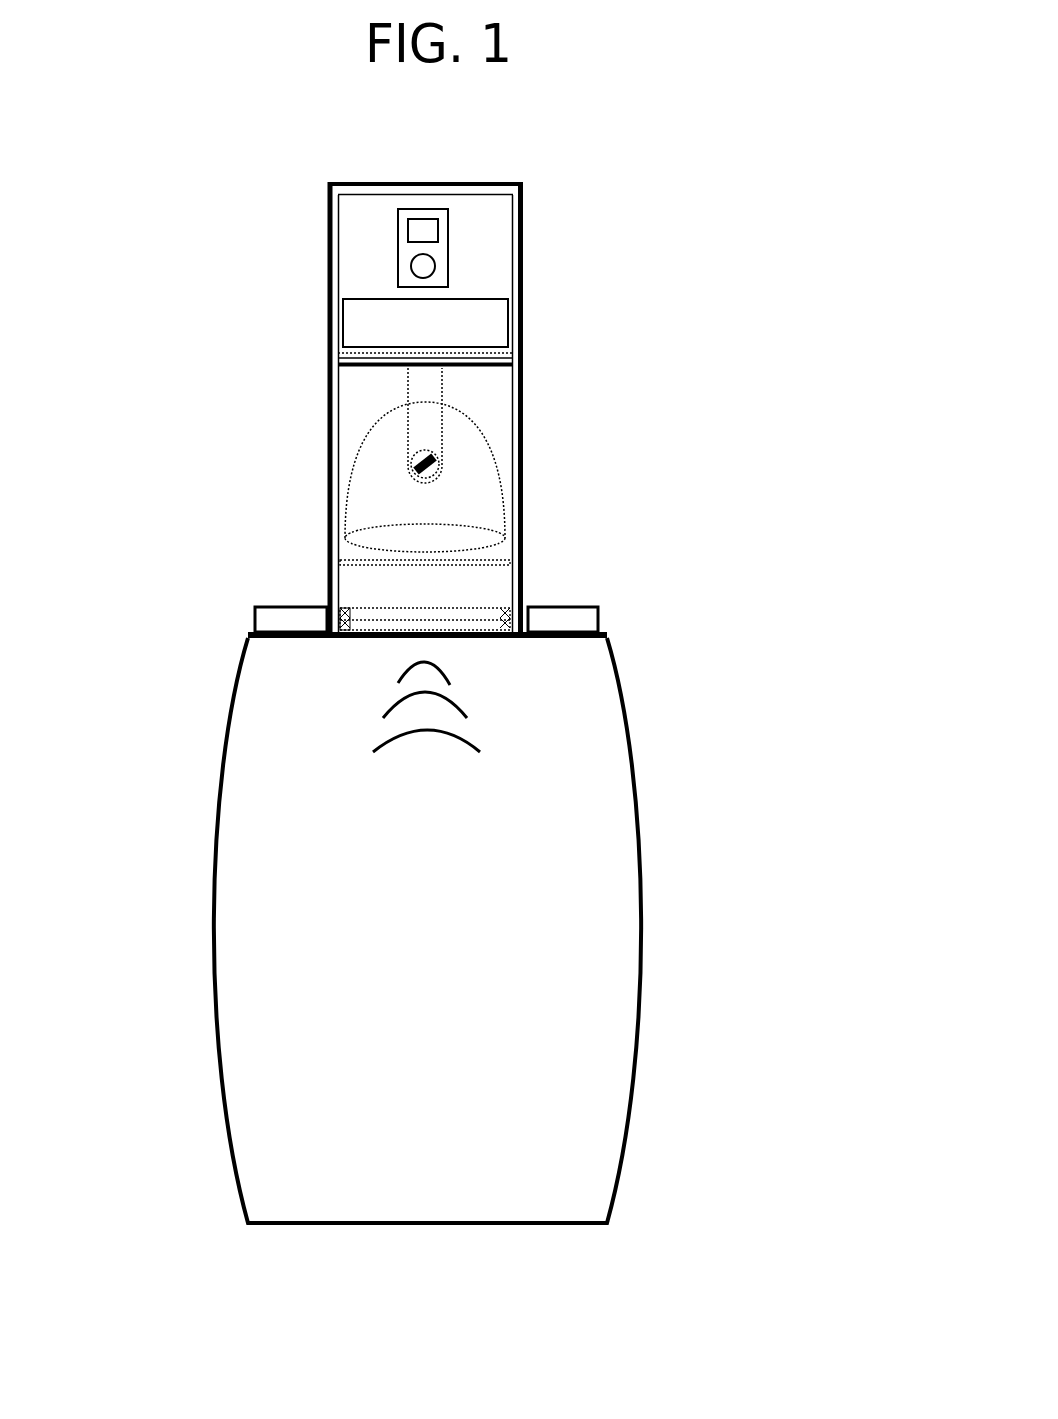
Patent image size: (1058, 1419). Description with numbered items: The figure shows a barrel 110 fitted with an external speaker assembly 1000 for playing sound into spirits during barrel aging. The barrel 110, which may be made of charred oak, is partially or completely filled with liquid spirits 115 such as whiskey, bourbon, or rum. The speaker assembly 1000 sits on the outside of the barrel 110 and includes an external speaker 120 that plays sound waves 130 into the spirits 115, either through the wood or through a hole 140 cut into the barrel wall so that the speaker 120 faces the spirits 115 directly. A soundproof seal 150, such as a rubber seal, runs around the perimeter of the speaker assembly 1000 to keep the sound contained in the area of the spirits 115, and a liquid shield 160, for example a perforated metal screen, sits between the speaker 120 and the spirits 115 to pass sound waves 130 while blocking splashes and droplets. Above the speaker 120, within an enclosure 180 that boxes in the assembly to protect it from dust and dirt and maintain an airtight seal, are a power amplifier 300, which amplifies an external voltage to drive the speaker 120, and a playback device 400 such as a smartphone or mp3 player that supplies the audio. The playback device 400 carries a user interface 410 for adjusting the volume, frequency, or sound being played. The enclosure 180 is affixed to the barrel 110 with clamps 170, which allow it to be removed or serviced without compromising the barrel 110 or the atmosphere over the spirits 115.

The speaker assembly 1000 is at (463, 142).
The barrel 110 is at (514, 981).
The liquid spirits 115 is at (570, 928).
The external speaker 120 is at (519, 446).
The sound waves 130 is at (387, 763).
The hole 140 is at (496, 583).
The soundproof seal 150 is at (350, 613).
The liquid shield 160 is at (502, 504).
The clamps 170 is at (603, 620).
The enclosure 180 is at (313, 423).
The power amplifier 300 is at (470, 325).
The playback device 400 is at (463, 228).
The user interface 410 is at (438, 263).